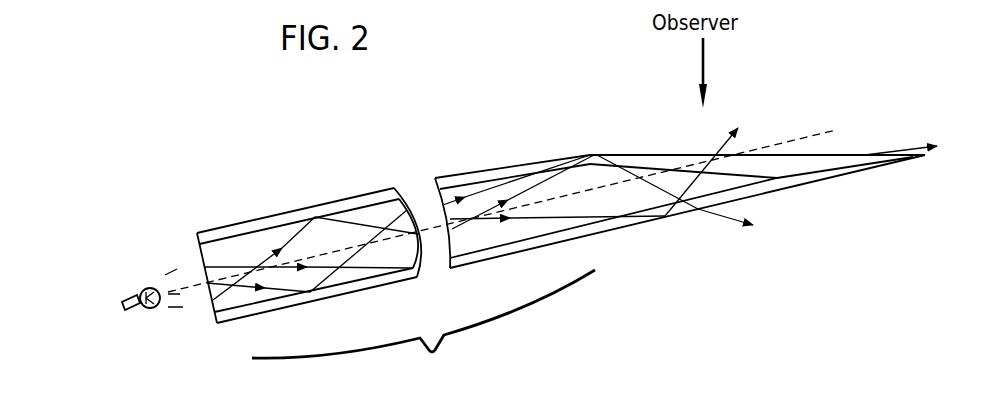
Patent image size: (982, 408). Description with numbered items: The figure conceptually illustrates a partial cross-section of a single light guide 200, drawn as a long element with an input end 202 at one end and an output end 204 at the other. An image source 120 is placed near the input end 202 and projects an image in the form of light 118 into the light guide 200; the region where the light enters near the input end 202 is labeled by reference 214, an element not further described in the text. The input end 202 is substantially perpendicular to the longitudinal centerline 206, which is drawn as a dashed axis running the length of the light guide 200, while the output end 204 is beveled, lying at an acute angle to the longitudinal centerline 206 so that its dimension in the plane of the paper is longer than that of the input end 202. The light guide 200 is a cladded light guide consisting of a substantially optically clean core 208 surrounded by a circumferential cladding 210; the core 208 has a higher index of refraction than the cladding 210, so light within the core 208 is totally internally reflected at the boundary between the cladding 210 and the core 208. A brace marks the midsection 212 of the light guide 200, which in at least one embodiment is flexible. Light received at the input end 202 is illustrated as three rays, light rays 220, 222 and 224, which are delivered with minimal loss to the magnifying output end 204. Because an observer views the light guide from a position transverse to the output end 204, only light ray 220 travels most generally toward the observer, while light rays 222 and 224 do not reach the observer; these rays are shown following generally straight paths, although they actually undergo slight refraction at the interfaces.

The light guide 200 is at (316, 136).
The input end 202 is at (213, 310).
The output end 204 is at (592, 155).
The longitudinal centerline 206 is at (523, 202).
The core 208 is at (317, 235).
The circumferential cladding 210 is at (219, 234).
The midsection 212 is at (423, 327).
The input end 214 is at (197, 243).
The light ray 220 is at (721, 164).
The light ray 222 is at (920, 139).
The light ray 224 is at (689, 199).
The image source 120 is at (142, 289).
The light 118 is at (173, 310).